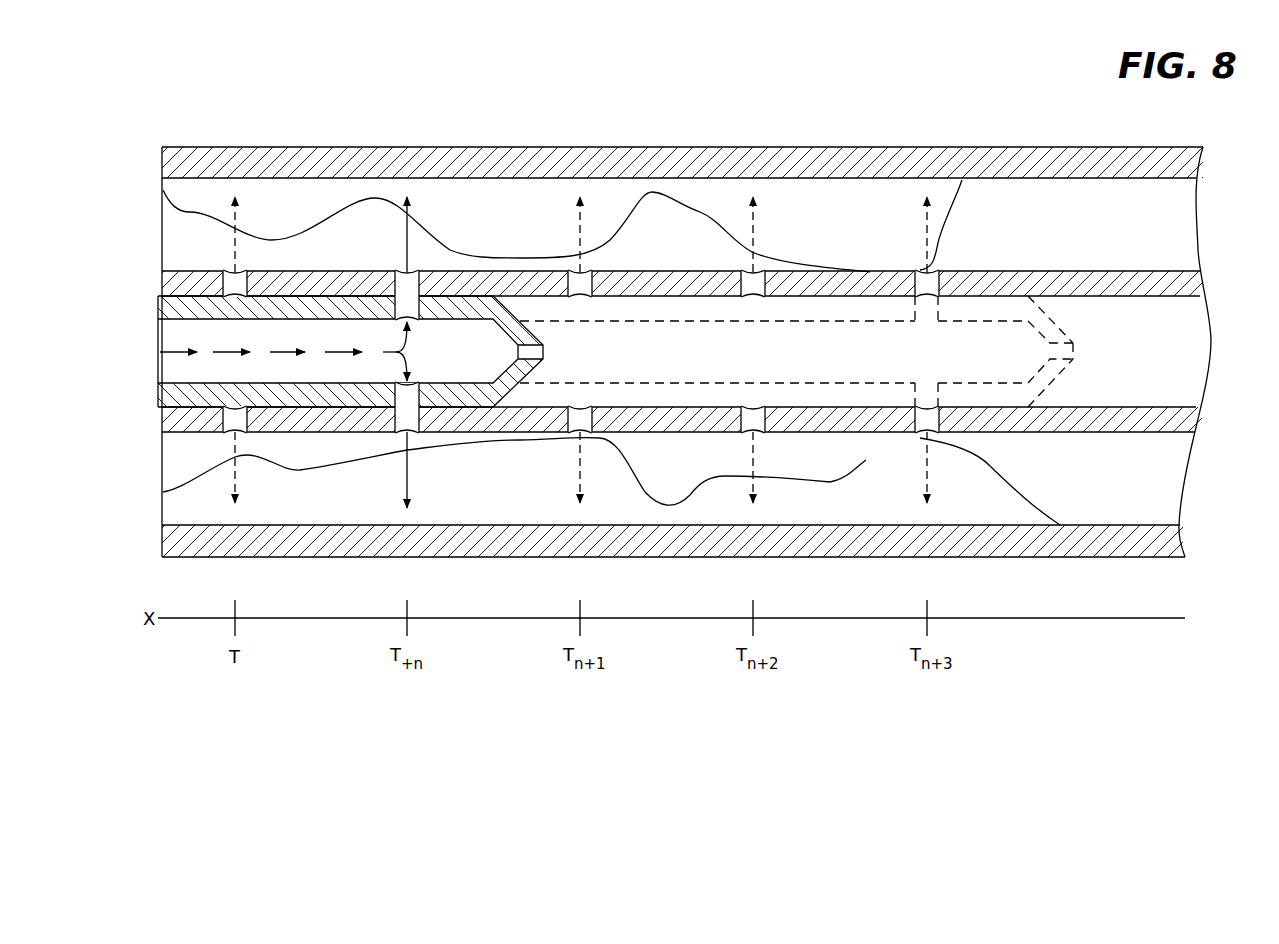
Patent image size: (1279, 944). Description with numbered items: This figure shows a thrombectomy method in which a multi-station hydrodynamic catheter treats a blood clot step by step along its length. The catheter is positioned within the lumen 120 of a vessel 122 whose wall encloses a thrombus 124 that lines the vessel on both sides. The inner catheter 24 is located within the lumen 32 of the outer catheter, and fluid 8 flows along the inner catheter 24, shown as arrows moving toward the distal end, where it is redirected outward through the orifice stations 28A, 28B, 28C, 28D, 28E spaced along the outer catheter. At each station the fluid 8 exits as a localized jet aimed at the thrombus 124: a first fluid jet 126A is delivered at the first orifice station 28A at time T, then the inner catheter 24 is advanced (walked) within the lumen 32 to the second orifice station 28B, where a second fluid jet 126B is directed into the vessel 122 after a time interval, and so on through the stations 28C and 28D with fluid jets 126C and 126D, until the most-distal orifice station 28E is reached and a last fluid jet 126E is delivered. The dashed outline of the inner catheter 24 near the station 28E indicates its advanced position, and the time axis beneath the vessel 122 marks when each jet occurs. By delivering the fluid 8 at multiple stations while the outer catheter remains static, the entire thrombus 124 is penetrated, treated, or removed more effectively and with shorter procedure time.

The fluid 8 is at (284, 350).
The inner catheter 24 is at (1040, 425).
The lumen of the outer catheter 32 is at (1105, 395).
The lumen of the vessel 120 is at (1068, 200).
The vessel 122 is at (1115, 162).
The thrombus 124 is at (787, 200).
The first orifice station 28A is at (230, 270).
The second orifice station 28B is at (402, 270).
The orifice station 28C is at (574, 270).
The orifice station 28D is at (747, 270).
The most-distal orifice station 28E is at (919, 270).
The first fluid jet 126A is at (236, 444).
The second fluid jet 126B is at (408, 444).
The fluid jet 126C is at (581, 444).
The fluid jet 126D is at (754, 444).
The last fluid jet 126E is at (928, 444).